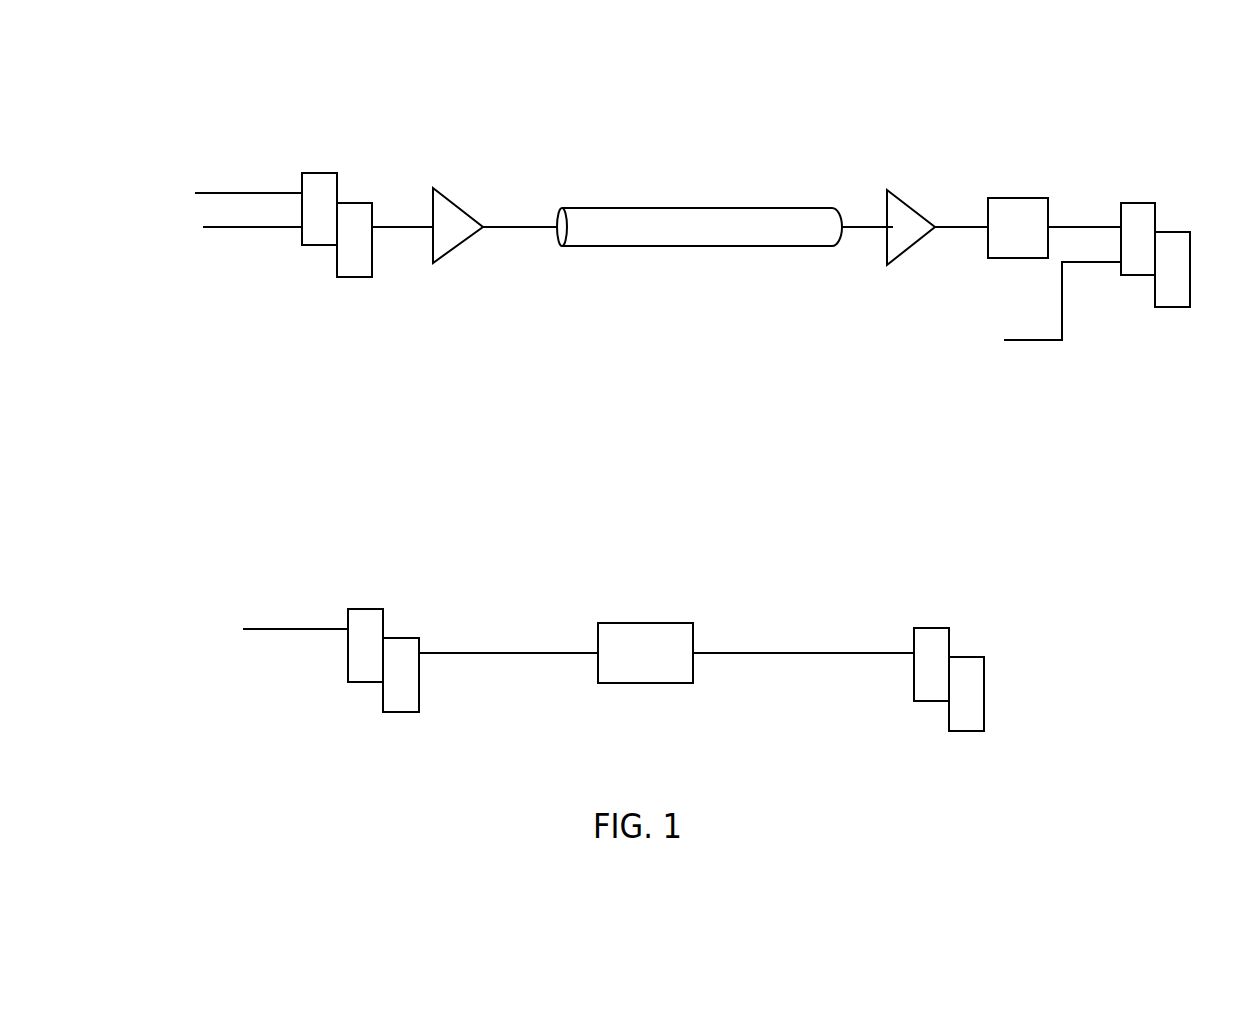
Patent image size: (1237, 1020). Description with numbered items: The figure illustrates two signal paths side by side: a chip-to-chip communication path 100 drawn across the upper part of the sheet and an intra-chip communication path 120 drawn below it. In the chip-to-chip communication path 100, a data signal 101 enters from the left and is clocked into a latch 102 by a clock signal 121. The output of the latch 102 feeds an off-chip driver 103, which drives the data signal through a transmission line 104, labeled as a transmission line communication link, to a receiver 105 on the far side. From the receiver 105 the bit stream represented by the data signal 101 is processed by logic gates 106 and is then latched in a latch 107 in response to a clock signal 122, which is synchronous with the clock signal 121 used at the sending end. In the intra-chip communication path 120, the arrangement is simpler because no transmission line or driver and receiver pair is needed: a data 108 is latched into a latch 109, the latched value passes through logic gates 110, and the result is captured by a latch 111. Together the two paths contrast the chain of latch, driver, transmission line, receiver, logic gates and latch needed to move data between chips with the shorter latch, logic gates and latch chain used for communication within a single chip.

The chip-to-chip communication path 100 is at (620, 35).
The data signal 101 is at (282, 192).
The latch 102 is at (317, 197).
The off-chip driver 103 is at (443, 213).
The transmission line 104 is at (680, 232).
The receiver 105 is at (893, 208).
The logic gates 106 is at (1013, 200).
The latch 107 is at (1142, 212).
The data 108 is at (318, 628).
The latch 109 is at (365, 620).
The logic gates 110 is at (620, 628).
The latch 111 is at (933, 638).
The intra-chip communication path 120 is at (707, 482).
The clock signal 121 is at (250, 230).
The clock signal 122 is at (1033, 347).